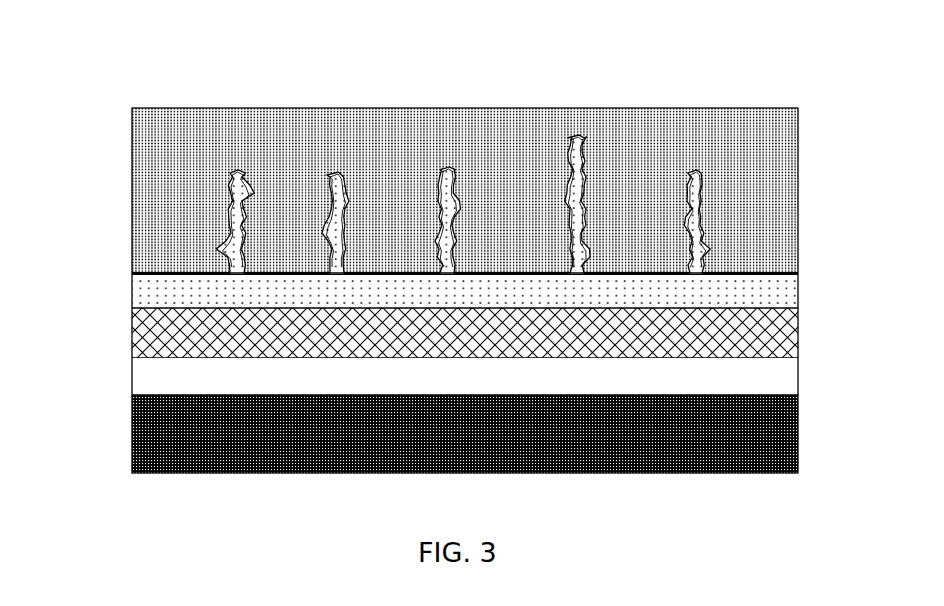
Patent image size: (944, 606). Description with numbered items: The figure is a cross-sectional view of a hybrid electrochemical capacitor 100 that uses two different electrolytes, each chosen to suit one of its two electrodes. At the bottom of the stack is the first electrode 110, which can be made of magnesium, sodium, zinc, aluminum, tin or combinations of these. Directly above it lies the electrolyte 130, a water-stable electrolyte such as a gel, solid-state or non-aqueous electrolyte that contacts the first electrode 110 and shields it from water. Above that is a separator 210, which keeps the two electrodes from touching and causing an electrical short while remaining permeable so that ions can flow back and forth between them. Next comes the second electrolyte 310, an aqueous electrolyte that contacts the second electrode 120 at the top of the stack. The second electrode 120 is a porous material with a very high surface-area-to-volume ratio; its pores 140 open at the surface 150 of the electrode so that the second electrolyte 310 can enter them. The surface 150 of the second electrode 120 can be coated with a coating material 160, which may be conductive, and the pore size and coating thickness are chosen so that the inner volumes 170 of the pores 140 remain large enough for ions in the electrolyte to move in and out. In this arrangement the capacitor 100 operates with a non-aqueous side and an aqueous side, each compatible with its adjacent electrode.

The hybrid electrochemical capacitor 100 is at (176, 94).
The first electrode 110 is at (131, 440).
The second electrode 120 is at (153, 198).
The electrolyte 130 is at (153, 372).
The pores 140 is at (576, 275).
The surface 150 is at (141, 275).
The coating material 160 is at (181, 270).
The inner volumes 170 is at (455, 198).
The separator 210 is at (765, 338).
The second electrolyte 310 is at (142, 297).